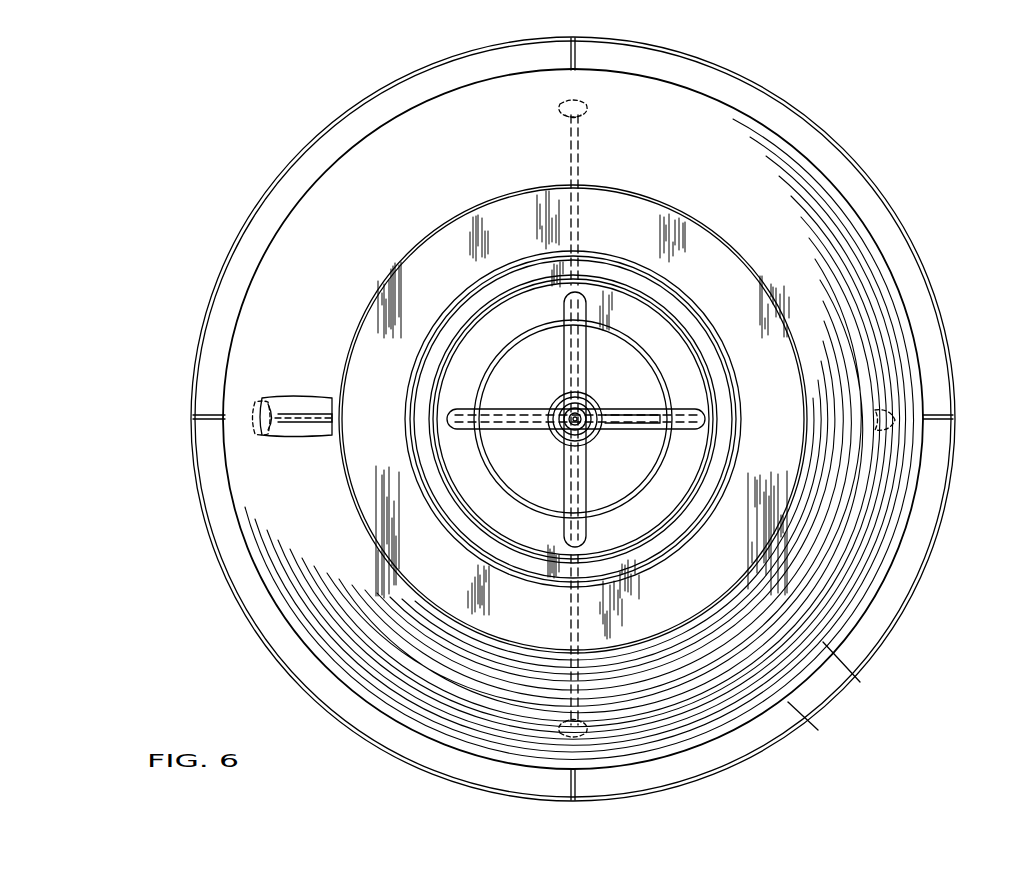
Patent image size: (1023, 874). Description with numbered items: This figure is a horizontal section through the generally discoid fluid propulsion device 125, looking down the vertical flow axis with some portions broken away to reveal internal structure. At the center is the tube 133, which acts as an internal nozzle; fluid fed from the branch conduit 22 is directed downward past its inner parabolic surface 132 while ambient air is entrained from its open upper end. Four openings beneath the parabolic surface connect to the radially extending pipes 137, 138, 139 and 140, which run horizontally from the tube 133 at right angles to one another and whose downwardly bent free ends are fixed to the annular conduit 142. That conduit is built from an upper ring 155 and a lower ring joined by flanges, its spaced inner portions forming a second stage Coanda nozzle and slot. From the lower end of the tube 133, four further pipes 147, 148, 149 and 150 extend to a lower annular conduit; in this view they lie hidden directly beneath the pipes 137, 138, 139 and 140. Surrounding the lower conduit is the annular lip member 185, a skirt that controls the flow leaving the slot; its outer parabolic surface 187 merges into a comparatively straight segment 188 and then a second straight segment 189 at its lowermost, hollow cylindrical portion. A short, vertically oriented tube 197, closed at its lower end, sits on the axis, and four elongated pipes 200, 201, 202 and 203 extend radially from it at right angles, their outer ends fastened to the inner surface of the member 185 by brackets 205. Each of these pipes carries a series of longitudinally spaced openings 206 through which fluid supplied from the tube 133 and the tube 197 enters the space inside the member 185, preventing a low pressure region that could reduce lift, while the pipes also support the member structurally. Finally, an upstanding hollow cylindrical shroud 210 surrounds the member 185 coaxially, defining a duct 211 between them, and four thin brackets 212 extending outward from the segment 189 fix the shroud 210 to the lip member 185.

The branch conduit 22 is at (622, 412).
The fluid propulsion device 125 is at (928, 278).
The inner parabolic surface 132 is at (567, 440).
The tube 133 is at (560, 402).
The radially extending pipe 137 is at (492, 405).
The radially extending pipe 138 is at (587, 368).
The radially extending pipe 139 is at (637, 437).
The radially extending pipe 140 is at (585, 533).
The annular conduit 142 is at (706, 384).
The radially extending pipe 147 is at (495, 433).
The radially extending pipe 148 is at (588, 380).
The radially extending pipe 149 is at (630, 430).
The radially extending pipe 150 is at (587, 497).
The upper ring 155 is at (667, 335).
The annular lip member 185 is at (864, 620).
The outer parabolic surface 187 is at (860, 682).
The straight segment 188 is at (898, 535).
The second straight segment 189 is at (818, 730).
The tube 197 is at (565, 398).
The elongated pipe 200 is at (287, 415).
The elongated pipe 201 is at (580, 145).
The elongated pipe 202 is at (830, 415).
The elongated pipe 203 is at (583, 710).
The bracket 205 is at (588, 103).
The opening 206 is at (323, 418).
The shroud 210 is at (350, 107).
The duct 211 is at (427, 82).
The bracket 212 is at (568, 60).